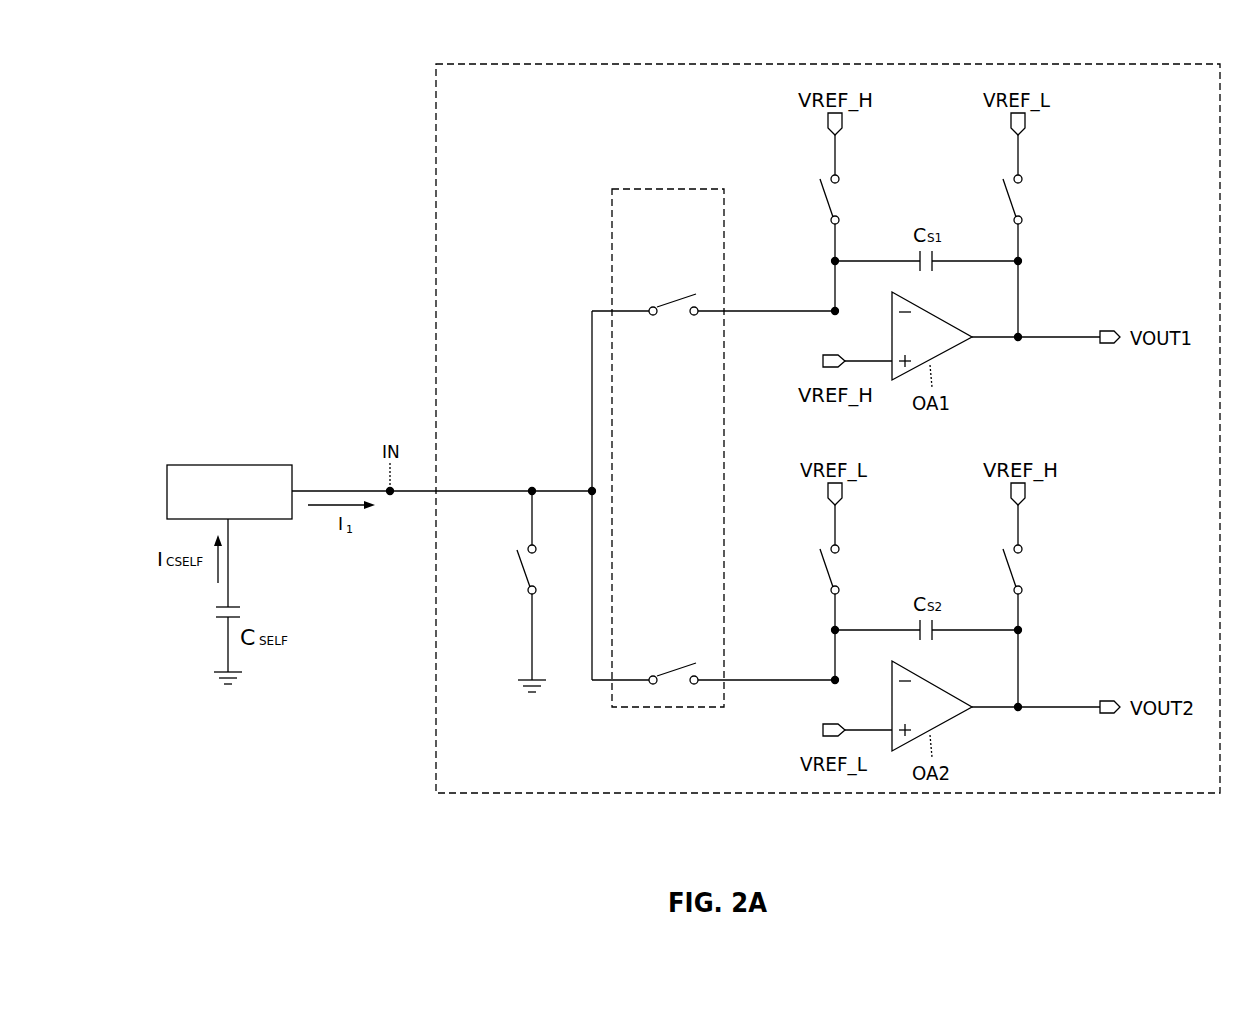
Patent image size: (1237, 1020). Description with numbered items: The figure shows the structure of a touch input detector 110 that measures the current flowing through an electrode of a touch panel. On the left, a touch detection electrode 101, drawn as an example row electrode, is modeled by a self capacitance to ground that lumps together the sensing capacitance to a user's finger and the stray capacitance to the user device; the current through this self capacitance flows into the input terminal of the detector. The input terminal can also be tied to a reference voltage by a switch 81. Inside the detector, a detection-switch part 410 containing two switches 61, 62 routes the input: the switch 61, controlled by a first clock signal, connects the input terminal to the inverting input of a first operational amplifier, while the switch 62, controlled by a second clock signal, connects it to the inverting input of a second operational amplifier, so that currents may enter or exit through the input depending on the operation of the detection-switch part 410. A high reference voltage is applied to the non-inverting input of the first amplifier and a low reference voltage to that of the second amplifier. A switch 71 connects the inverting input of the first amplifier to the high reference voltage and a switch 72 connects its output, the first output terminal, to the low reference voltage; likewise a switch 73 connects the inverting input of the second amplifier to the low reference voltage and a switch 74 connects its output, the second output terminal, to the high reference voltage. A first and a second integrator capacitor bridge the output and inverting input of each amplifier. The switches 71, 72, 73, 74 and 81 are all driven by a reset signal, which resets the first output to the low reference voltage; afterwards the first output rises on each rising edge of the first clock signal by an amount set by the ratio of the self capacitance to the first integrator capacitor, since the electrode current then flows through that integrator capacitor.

The touch input detector 110 is at (830, 63).
The detection-switch part 410 is at (664, 189).
The touch detection electrode 101 is at (230, 465).
The switch 61 is at (662, 256).
The switch 62 is at (662, 625).
The switch 71 is at (803, 165).
The switch 72 is at (988, 165).
The switch 73 is at (803, 535).
The switch 74 is at (988, 535).
The switch 81 is at (508, 585).